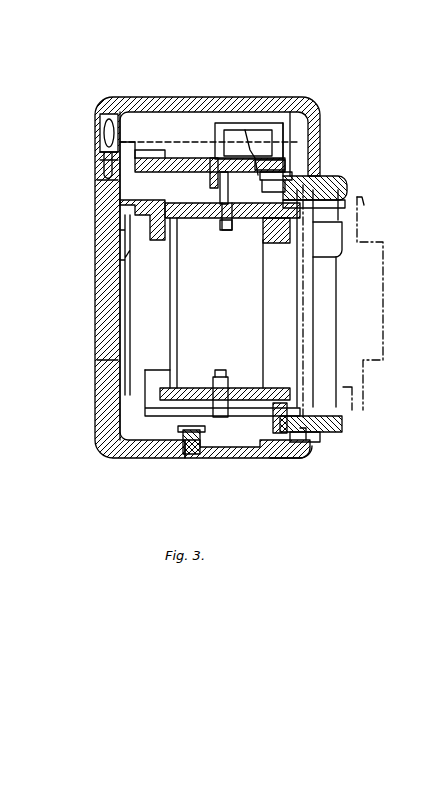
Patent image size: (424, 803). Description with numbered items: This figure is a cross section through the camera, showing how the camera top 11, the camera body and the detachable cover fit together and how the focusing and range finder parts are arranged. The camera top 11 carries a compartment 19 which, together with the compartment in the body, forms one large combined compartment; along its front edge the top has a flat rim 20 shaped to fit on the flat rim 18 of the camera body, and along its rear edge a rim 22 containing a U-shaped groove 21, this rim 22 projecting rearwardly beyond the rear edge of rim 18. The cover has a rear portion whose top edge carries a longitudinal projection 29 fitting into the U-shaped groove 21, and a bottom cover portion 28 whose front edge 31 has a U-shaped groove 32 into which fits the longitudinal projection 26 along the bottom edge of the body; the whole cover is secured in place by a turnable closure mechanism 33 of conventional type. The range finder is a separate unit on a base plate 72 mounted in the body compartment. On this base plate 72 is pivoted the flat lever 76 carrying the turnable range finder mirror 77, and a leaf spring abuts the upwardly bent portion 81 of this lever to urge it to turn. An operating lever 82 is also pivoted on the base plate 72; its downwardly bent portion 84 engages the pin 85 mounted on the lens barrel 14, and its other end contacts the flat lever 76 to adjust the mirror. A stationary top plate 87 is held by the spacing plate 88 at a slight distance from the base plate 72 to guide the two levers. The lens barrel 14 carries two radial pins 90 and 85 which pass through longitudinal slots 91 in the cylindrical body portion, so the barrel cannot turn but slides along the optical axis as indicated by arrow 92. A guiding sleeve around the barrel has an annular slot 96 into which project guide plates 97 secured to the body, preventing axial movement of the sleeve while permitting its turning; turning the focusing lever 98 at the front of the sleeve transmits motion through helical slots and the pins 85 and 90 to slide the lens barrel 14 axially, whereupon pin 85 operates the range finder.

The camera top 11 is at (206, 97).
The lens barrel 14 is at (300, 400).
The flat rim 18 is at (140, 208).
The compartment 19 is at (145, 112).
The flat rim 20 is at (312, 188).
The U-shaped groove 21 is at (103, 157).
The rim 22 is at (105, 148).
The longitudinal projection 26 is at (310, 445).
The bottom cover portion 28 is at (175, 452).
The longitudinal projection 29 is at (110, 185).
The front edge 31 is at (308, 436).
The U-shaped groove 32 is at (292, 460).
The turnable closure mechanism 33 is at (195, 456).
The base plate 72 is at (128, 245).
The flat lever 76 is at (275, 178).
The turnable range finder mirror 77 is at (285, 130).
The upwardly bent portion 81 is at (272, 162).
The operating lever 82 is at (224, 175).
The downwardly bent portion 84 is at (258, 135).
The pin 85 is at (268, 190).
The stationary top plate 87 is at (248, 150).
The spacing plate 88 is at (163, 157).
The pin 90 is at (230, 392).
The longitudinal slots 91 is at (228, 212).
The arrow 92 is at (238, 294).
The annular slot 96 is at (305, 212).
The guide plates 97 is at (340, 203).
The focusing lever 98 is at (345, 426).